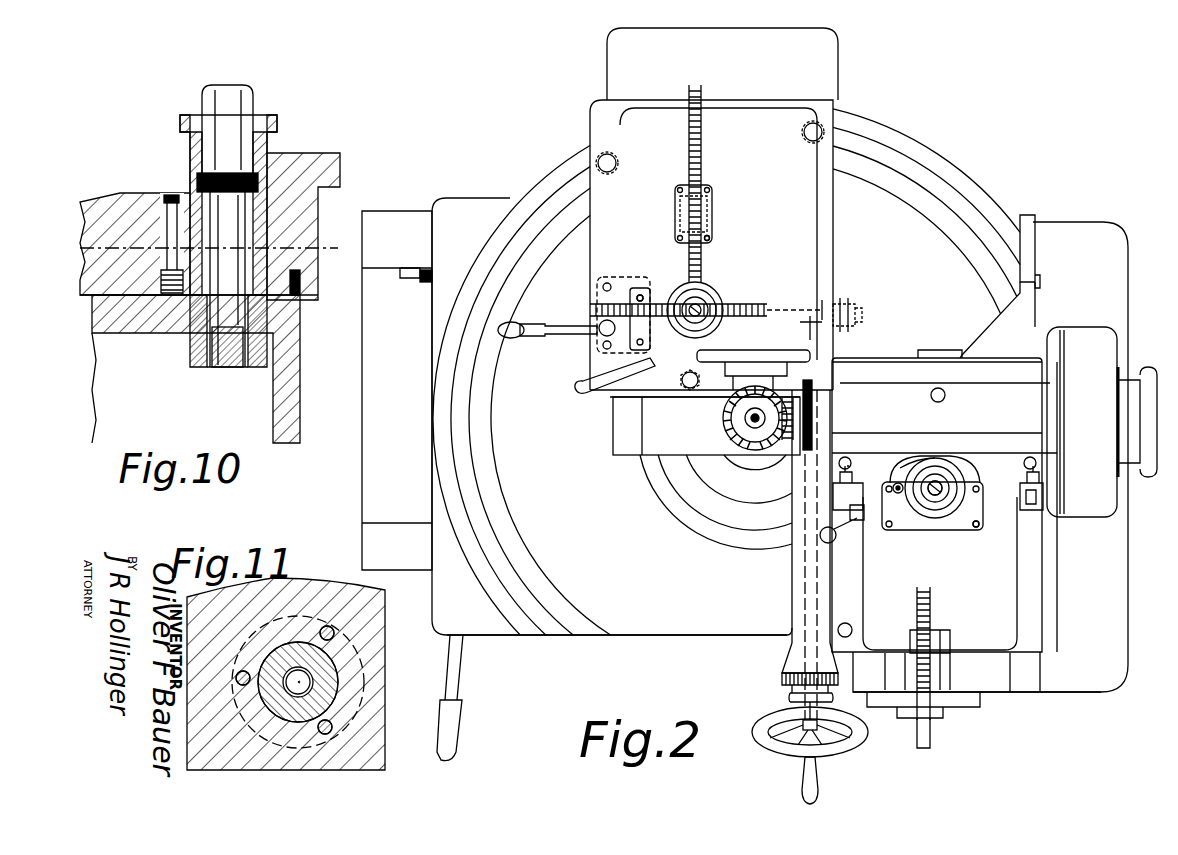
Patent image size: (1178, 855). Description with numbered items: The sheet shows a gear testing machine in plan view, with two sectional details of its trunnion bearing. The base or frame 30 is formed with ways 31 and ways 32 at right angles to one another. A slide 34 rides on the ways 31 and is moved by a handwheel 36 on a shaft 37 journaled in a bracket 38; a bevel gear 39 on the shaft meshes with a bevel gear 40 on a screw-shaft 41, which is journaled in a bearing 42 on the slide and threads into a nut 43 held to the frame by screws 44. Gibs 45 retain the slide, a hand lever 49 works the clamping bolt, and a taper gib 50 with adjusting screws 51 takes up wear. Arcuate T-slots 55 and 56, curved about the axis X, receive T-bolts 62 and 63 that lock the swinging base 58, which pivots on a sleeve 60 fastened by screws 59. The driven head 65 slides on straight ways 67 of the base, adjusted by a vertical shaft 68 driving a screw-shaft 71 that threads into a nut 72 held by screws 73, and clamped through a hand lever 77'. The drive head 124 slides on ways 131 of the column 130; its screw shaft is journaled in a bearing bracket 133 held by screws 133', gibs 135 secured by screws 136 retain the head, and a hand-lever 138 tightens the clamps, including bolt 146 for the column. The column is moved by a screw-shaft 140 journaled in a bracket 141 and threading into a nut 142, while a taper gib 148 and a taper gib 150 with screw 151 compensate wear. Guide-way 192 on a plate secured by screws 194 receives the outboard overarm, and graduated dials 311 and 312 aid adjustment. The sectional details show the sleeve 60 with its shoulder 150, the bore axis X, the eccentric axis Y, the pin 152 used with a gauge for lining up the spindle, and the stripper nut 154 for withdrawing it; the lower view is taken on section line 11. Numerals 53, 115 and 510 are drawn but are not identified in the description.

In FIG. 10, the section line 11 is at (209, 244).
In FIG. 2, the base or frame 30 is at (362, 450).
In FIG. 2, the ways 31 is at (400, 563).
In FIG. 2, the ways 32 is at (1035, 690).
In FIG. 10, the slide or plate 34 is at (236, 438).
In FIG. 2, the slide or plate 34 is at (645, 633).
In FIG. 2, the handwheel 36 is at (770, 740).
In FIG. 2, the shaft 37 is at (796, 644).
In FIG. 2, the bracket 38 is at (785, 668).
In FIG. 2, the bevel gear 39 is at (800, 330).
In FIG. 2, the bevel gear 40 is at (826, 308).
In FIG. 2, the screw-shaft 41 is at (806, 312).
In FIG. 2, the bearing 42 is at (846, 304).
In FIG. 2, the nut 43 is at (631, 319).
In FIG. 2, the screws 44 is at (645, 292).
In FIG. 2, the gibs 45 is at (636, 304).
In FIG. 2, the hand lever 49 is at (460, 665).
In FIG. 2, the taper gib 50 is at (406, 272).
In FIG. 2, the adjusting screws 51 is at (1040, 284).
In FIG. 2, the table 53 is at (726, 364).
In FIG. 2, the arcuate T-slot 55 is at (462, 434).
In FIG. 2, the arcuate T-slot 56 is at (735, 490).
In FIG. 10, the swinging base 58 is at (316, 213).
In FIG. 11, the swinging base 58 is at (382, 738).
In FIG. 2, the swinging base 58 is at (652, 456).
In FIG. 10, the screws 59 is at (171, 193).
In FIG. 11, the screws 59 is at (238, 680).
In FIG. 2, the screws 59 is at (733, 414).
In FIG. 10, the sleeve 60 is at (205, 335).
In FIG. 11, the sleeve 60 is at (294, 640).
In FIG. 2, the T-bolt 62 is at (822, 128).
In FIG. 2, the T-bolt 63 is at (677, 380).
In FIG. 2, the driven head 65 is at (714, 212).
In FIG. 2, the straight ways 67 is at (778, 452).
In FIG. 2, the vertical shaft 68 is at (712, 305).
In FIG. 2, the screw-shaft 71 is at (701, 173).
In FIG. 2, the nut 72 is at (712, 217).
In FIG. 2, the screws 73 is at (710, 238).
In FIG. 2, the hand lever 77' is at (556, 320).
In FIG. 2, the handle 115 is at (580, 394).
In FIG. 2, the drive head 124 is at (888, 372).
In FIG. 2, the column 130 is at (1015, 603).
In FIG. 2, the ways 131 is at (868, 482).
In FIG. 2, the bearing bracket 133 is at (933, 517).
In FIG. 2, the screws 133' is at (995, 527).
In FIG. 2, the gibs 135 is at (1045, 500).
In FIG. 2, the screws 136 is at (1034, 512).
In FIG. 2, the hand-lever 138 is at (832, 542).
In FIG. 2, the screw-shaft 140 is at (932, 606).
In FIG. 2, the bracket 141 is at (968, 710).
In FIG. 2, the nut 142 is at (916, 640).
In FIG. 2, the bolt 146 is at (845, 623).
In FIG. 2, the taper gib 148 is at (935, 742).
In FIG. 10, the taper gib / shoulder 150 is at (302, 277).
In FIG. 2, the taper gib / shoulder 150 is at (899, 494).
In FIG. 2, the screw 151 is at (903, 474).
In FIG. 10, the pin 152 is at (242, 108).
In FIG. 2, the pin 152 is at (945, 489).
In FIG. 10, the stripper nut 154 is at (272, 124).
In FIG. 2, the guide-way 192 is at (1030, 420).
In FIG. 2, the screws 194 is at (1025, 458).
In FIG. 2, the graduated dial 311 is at (700, 298).
In FIG. 2, the graduated dial 312 is at (932, 505).
In FIG. 2, the knurled ring 510 is at (782, 680).
In FIG. 11, the axis X x is at (302, 684).
In FIG. 2, the axis X x is at (752, 424).
In FIG. 11, the axis Y y is at (302, 681).